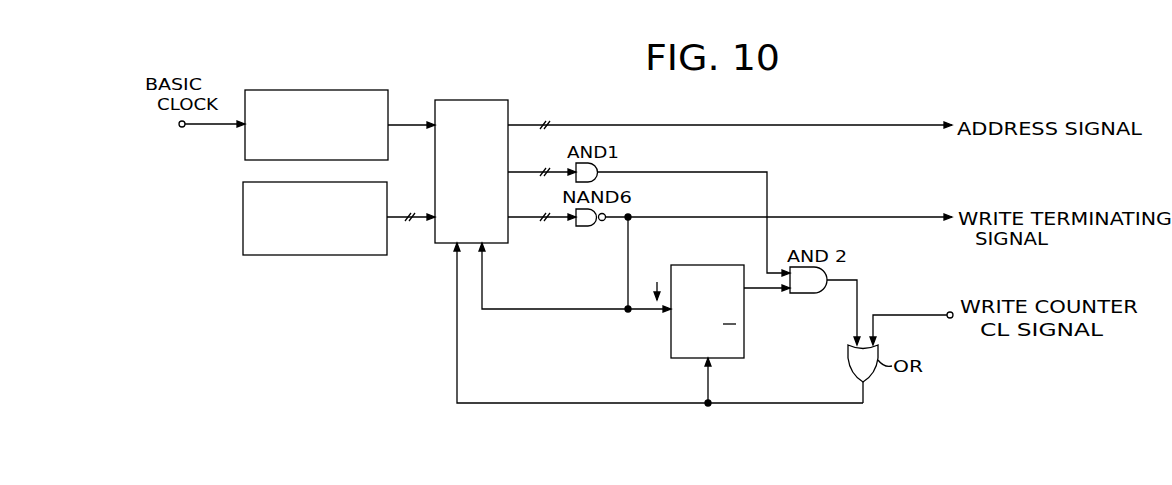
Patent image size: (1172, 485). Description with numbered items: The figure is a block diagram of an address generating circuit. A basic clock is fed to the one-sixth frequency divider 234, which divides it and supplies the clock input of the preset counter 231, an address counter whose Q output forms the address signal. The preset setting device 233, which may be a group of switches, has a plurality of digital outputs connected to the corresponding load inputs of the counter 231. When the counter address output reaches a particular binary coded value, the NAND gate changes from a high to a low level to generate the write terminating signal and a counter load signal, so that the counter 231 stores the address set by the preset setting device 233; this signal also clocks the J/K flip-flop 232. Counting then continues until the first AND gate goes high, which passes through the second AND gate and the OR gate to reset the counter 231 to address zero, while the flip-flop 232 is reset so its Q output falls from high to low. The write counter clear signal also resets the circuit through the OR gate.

The preset counter 231 is at (473, 100).
The J/K flip-flop 232 is at (701, 265).
The preset setting device 233 is at (340, 256).
The 1/6 frequency divider 234 is at (337, 90).